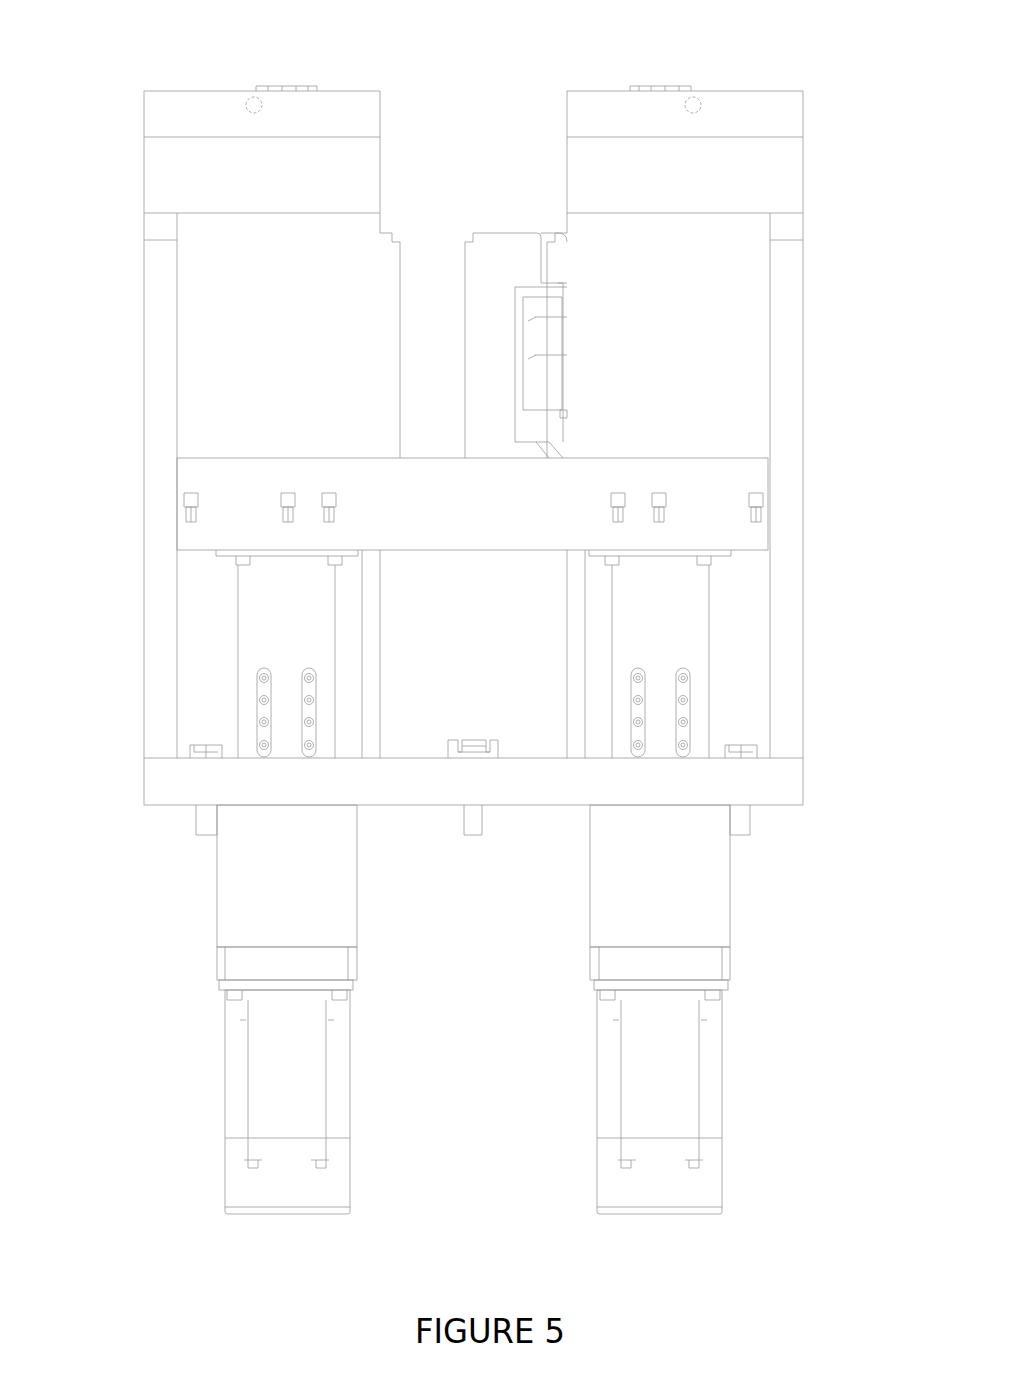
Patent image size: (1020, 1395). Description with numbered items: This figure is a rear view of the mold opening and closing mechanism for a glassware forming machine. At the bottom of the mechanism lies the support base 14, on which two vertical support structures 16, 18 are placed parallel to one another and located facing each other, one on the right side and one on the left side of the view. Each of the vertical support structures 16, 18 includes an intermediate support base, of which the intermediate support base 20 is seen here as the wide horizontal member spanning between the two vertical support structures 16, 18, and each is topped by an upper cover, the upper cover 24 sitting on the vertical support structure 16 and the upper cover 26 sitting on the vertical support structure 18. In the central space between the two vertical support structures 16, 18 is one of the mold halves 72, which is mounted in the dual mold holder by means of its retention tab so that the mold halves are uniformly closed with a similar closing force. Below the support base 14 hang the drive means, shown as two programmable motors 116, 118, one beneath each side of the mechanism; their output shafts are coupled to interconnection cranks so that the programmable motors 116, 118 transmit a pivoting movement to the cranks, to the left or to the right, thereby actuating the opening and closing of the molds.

The support base 14 is at (715, 782).
The vertical support structure 16 is at (737, 325).
The vertical support structure 18 is at (250, 368).
The intermediate support base 20 is at (691, 497).
The upper cover 24 is at (714, 99).
The upper cover 26 is at (316, 107).
The mold half 72 is at (506, 255).
The programmable motor 116 is at (700, 1016).
The programmable motor 118 is at (310, 1042).